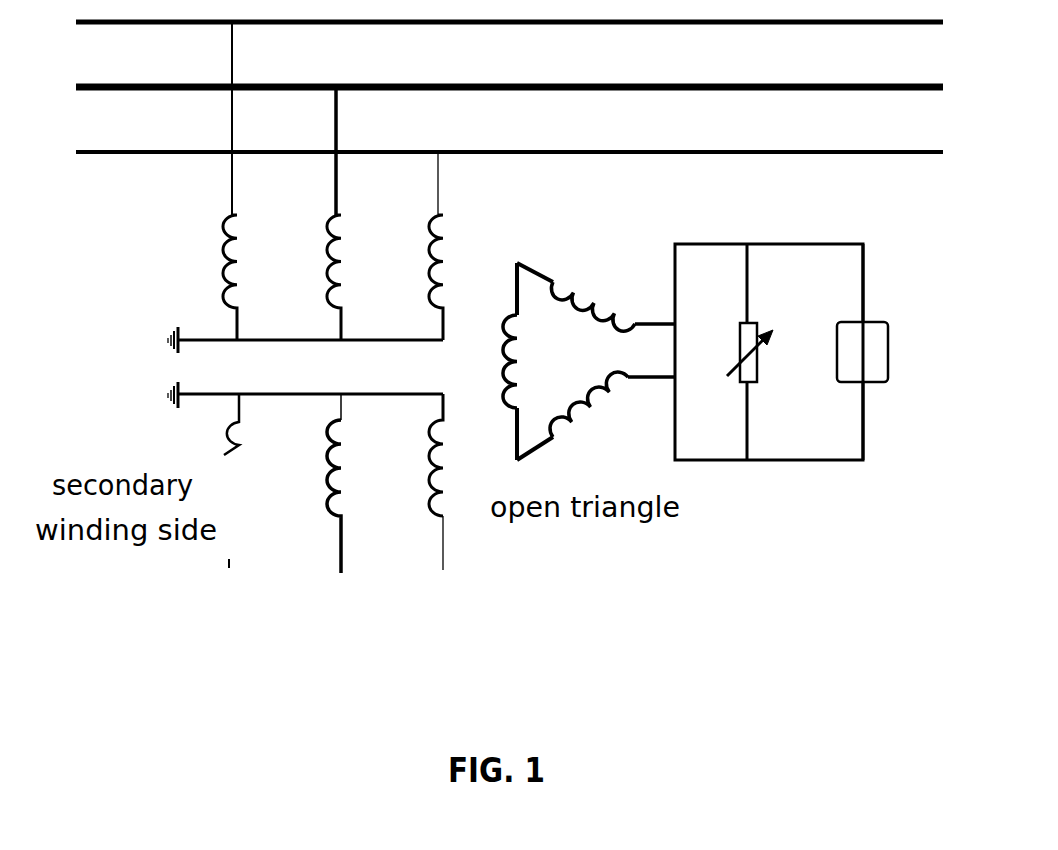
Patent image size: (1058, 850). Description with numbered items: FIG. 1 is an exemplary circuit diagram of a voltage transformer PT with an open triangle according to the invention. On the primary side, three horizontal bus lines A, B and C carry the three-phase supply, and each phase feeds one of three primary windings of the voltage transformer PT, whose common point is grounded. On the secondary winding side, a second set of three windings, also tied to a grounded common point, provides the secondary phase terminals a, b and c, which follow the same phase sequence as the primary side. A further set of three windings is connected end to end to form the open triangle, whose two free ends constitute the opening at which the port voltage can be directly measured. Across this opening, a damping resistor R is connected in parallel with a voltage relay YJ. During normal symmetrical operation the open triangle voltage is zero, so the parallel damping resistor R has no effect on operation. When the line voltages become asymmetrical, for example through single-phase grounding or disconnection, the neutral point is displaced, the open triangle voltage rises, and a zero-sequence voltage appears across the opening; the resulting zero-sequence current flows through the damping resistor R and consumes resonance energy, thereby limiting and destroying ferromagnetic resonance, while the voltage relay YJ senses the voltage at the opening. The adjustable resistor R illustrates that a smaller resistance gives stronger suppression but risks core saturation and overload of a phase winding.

The phase A bus line A is at (490, 111).
The phase B bus line B is at (490, 143).
The phase C bus line C is at (490, 176).
The voltage transformer PT is at (283, 311).
The secondary phase a terminal a is at (231, 500).
The secondary phase b terminal b is at (336, 500).
The secondary phase c terminal c is at (439, 500).
The damping resistor R is at (744, 352).
The voltage relay YJ is at (862, 352).